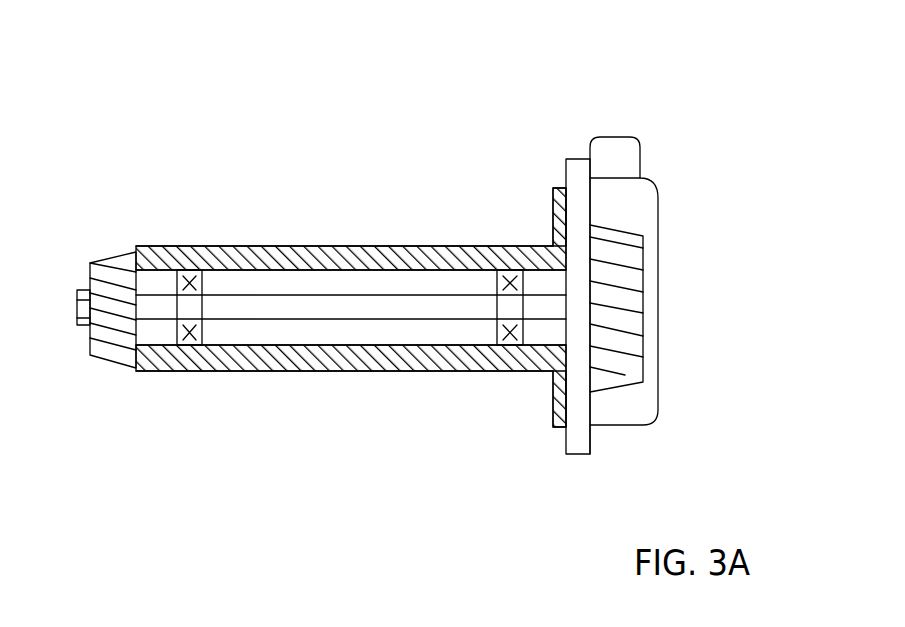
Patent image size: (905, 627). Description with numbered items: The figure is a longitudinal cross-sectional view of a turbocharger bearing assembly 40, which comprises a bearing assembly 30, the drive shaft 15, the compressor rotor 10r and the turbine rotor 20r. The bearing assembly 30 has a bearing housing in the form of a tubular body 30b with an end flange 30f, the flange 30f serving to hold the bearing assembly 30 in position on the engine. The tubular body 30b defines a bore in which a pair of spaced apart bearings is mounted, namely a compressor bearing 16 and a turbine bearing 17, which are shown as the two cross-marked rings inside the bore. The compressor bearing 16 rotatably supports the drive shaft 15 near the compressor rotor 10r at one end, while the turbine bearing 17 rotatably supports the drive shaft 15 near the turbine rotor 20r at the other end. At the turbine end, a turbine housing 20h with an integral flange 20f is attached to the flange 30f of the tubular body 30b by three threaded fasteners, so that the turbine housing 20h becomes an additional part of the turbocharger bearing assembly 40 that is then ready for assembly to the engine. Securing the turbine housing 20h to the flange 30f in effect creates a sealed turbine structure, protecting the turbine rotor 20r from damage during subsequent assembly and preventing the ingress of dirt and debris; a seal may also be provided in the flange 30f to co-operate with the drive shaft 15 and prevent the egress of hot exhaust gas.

The compressor rotor 10r is at (109, 256).
The drive shaft 15 is at (268, 294).
The compressor bearing 16 is at (201, 340).
The turbine bearing 17 is at (497, 287).
The bearing assembly 30 is at (404, 243).
The tubular body 30b is at (322, 245).
The end flange 30f is at (548, 190).
The integral flange 20f is at (582, 158).
The turbine rotor 20r is at (626, 224).
The turbine housing 20h is at (656, 189).
The turbocharger bearing assembly 40 is at (645, 425).